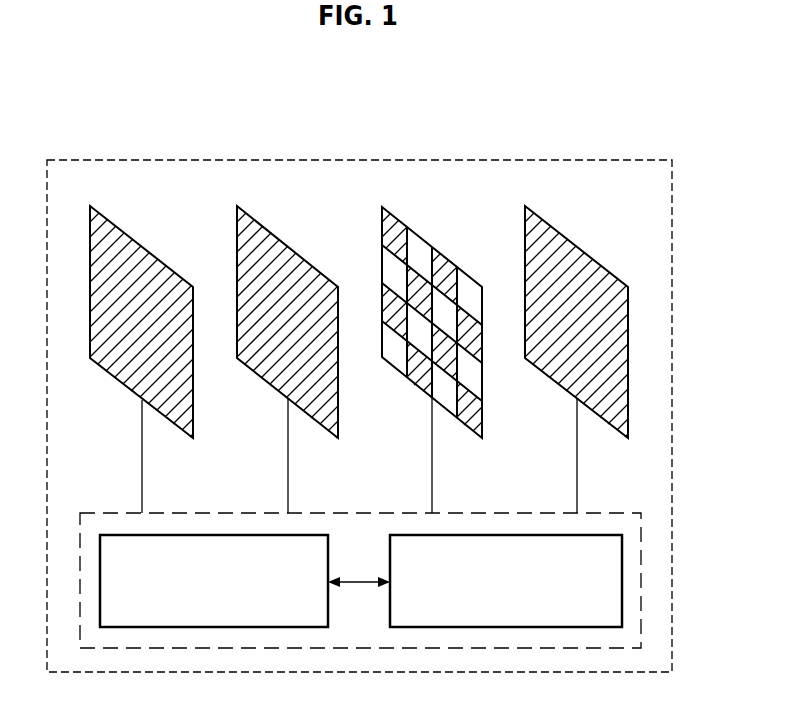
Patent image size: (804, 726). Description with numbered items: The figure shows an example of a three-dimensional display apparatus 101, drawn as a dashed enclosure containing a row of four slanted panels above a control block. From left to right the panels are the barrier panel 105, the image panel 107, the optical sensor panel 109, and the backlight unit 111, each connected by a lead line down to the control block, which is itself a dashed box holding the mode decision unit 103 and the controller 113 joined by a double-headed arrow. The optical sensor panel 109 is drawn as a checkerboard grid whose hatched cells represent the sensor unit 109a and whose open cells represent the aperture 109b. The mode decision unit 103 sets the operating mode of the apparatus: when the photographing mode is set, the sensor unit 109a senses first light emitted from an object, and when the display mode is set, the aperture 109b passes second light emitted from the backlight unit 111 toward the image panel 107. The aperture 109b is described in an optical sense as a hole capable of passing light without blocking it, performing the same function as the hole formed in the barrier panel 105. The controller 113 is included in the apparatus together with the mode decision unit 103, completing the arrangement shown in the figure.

The three-dimensional (3D) display apparatus 101 is at (357, 160).
The mode decision unit 103 is at (222, 627).
The barrier panel 105 is at (139, 243).
The image panel 107 is at (287, 242).
The optical sensor panel 109 is at (468, 265).
The sensor unit 109a is at (392, 227).
The aperture 109b is at (472, 297).
The backlight unit 111 is at (577, 247).
The controller 113 is at (500, 627).